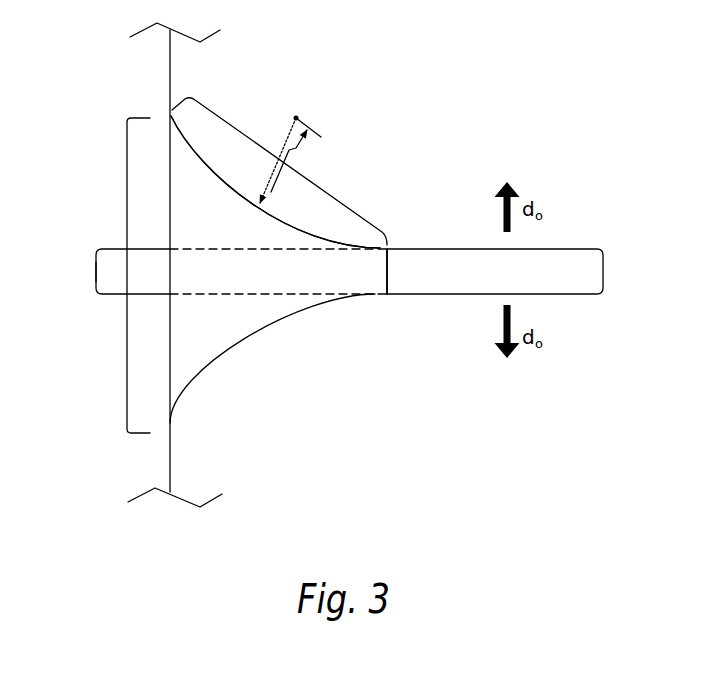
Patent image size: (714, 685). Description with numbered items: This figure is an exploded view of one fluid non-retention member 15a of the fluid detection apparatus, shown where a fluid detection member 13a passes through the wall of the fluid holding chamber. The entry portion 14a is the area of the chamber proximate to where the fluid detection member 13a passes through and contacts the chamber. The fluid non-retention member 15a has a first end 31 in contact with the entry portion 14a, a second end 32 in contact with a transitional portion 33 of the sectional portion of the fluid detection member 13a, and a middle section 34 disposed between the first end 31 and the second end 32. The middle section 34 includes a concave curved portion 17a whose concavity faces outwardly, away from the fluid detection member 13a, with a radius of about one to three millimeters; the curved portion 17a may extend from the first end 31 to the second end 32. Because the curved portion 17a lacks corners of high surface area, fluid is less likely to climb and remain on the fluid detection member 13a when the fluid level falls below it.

The fluid detection member 13a is at (603, 257).
The entry portion 14a is at (128, 282).
The fluid non-retention member 15a is at (200, 202).
The concave curved portion 17a is at (285, 222).
The first end 31 is at (174, 268).
The second end 32 is at (383, 273).
The transitional portion 33 is at (390, 272).
The middle section 34 is at (232, 122).